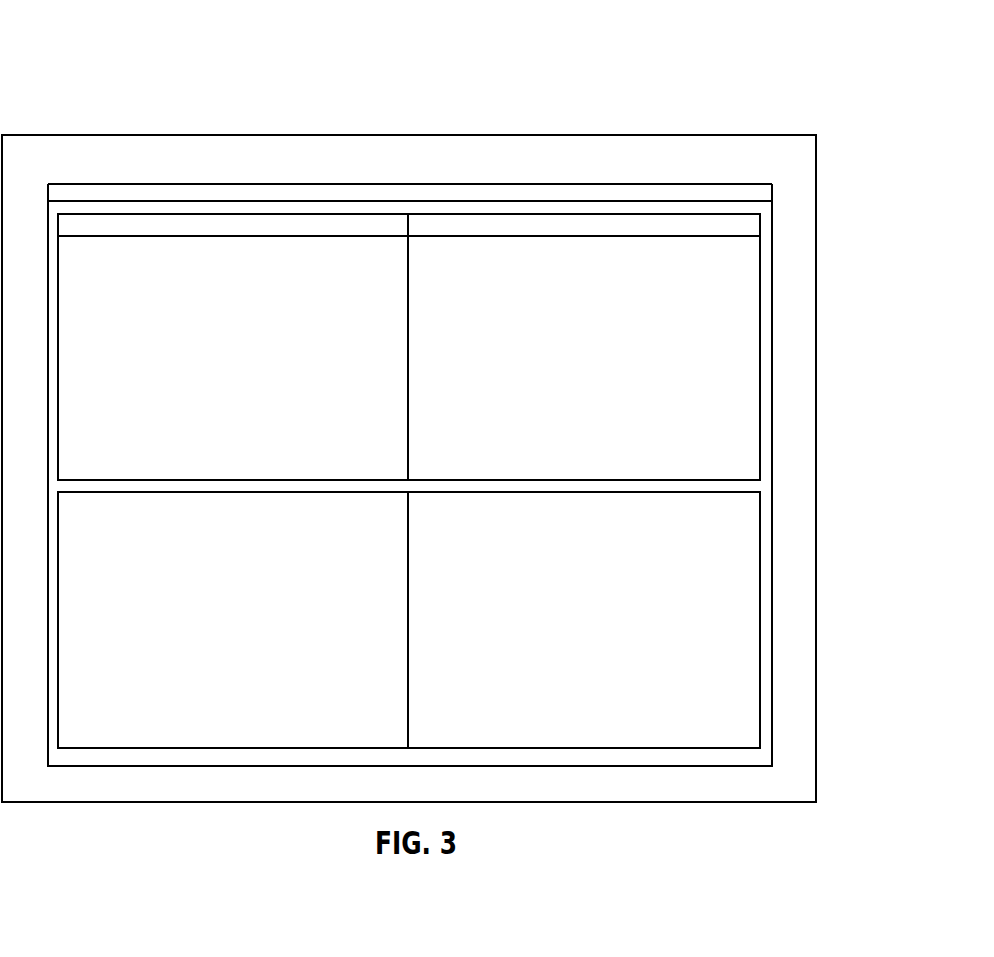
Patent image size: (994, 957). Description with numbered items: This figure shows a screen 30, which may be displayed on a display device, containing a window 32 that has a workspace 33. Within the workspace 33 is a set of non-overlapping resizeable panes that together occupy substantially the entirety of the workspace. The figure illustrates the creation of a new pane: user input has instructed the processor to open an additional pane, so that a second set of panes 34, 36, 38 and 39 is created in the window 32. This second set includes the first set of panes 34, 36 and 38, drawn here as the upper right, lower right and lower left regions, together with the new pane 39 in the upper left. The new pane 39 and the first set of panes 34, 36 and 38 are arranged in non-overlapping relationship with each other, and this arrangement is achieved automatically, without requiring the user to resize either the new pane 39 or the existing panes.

The screen 30 is at (78, 135).
The window 32 is at (289, 184).
The workspace 33 is at (770, 692).
The pane 34 is at (695, 318).
The pane 36 is at (642, 547).
The pane 38 is at (154, 634).
The new pane 39 is at (305, 347).